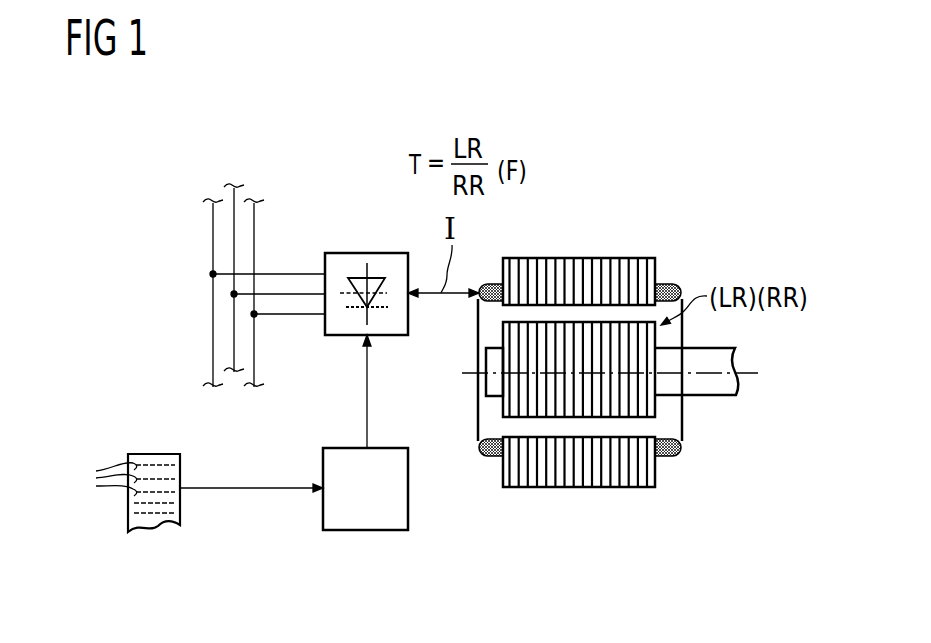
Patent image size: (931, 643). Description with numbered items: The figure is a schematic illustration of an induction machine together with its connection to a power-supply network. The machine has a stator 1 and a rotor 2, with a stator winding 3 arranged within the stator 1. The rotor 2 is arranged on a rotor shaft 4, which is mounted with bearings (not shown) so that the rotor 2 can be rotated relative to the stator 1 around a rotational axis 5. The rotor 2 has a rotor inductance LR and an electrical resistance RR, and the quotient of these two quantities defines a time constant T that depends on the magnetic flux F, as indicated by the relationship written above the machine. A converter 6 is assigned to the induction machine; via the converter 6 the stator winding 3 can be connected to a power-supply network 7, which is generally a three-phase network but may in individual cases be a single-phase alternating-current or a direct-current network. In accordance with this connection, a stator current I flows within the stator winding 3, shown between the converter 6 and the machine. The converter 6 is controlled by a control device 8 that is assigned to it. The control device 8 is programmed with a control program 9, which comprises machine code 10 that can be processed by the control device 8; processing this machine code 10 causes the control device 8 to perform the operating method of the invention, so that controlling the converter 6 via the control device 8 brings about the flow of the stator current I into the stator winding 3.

The stator 1 is at (580, 258).
The rotor 2 is at (657, 338).
The stator winding 3 is at (672, 285).
The rotor shaft 4 is at (698, 395).
The rotational axis 5 is at (747, 374).
The converter 6 is at (366, 253).
The power-supply network 7 is at (220, 150).
The control device 8 is at (365, 530).
The control program 9 is at (152, 455).
The machine code 10 is at (100, 477).